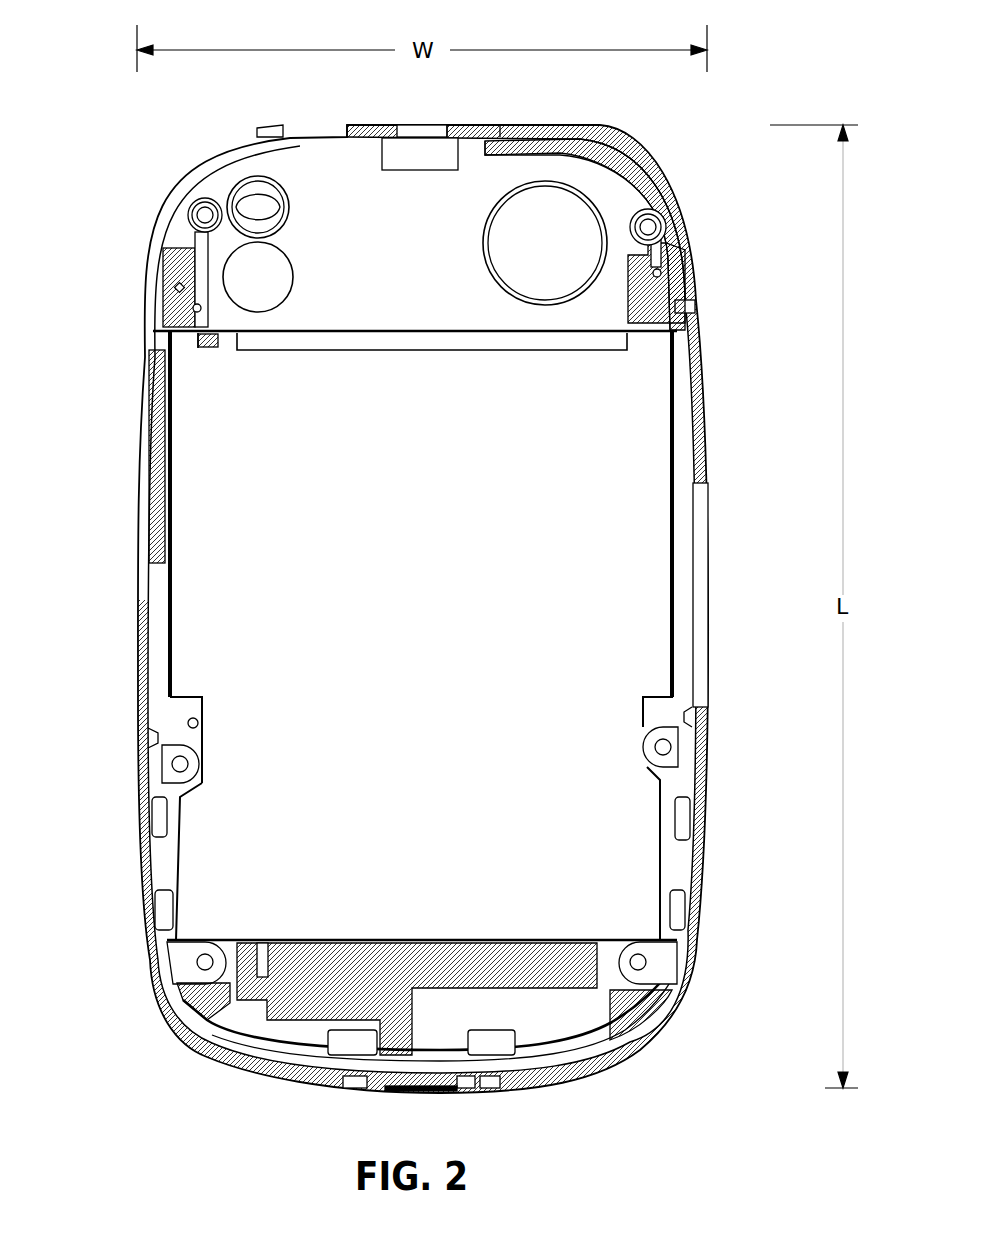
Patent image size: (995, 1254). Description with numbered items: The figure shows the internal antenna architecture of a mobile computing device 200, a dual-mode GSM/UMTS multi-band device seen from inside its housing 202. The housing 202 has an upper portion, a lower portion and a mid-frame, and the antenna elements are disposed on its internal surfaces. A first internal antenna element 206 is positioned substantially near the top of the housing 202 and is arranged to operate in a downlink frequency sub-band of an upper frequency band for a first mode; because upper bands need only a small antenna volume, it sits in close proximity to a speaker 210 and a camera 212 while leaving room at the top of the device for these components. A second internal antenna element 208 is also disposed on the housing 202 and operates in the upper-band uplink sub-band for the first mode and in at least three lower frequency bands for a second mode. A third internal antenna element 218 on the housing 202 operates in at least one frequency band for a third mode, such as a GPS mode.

The mobile computing device 200 is at (749, 81).
The housing 202 is at (138, 634).
The first internal antenna element 206 is at (688, 272).
The second internal antenna element 208 is at (248, 950).
The speaker 210 is at (593, 207).
The camera 212 is at (283, 303).
The third internal antenna element 218 is at (165, 328).